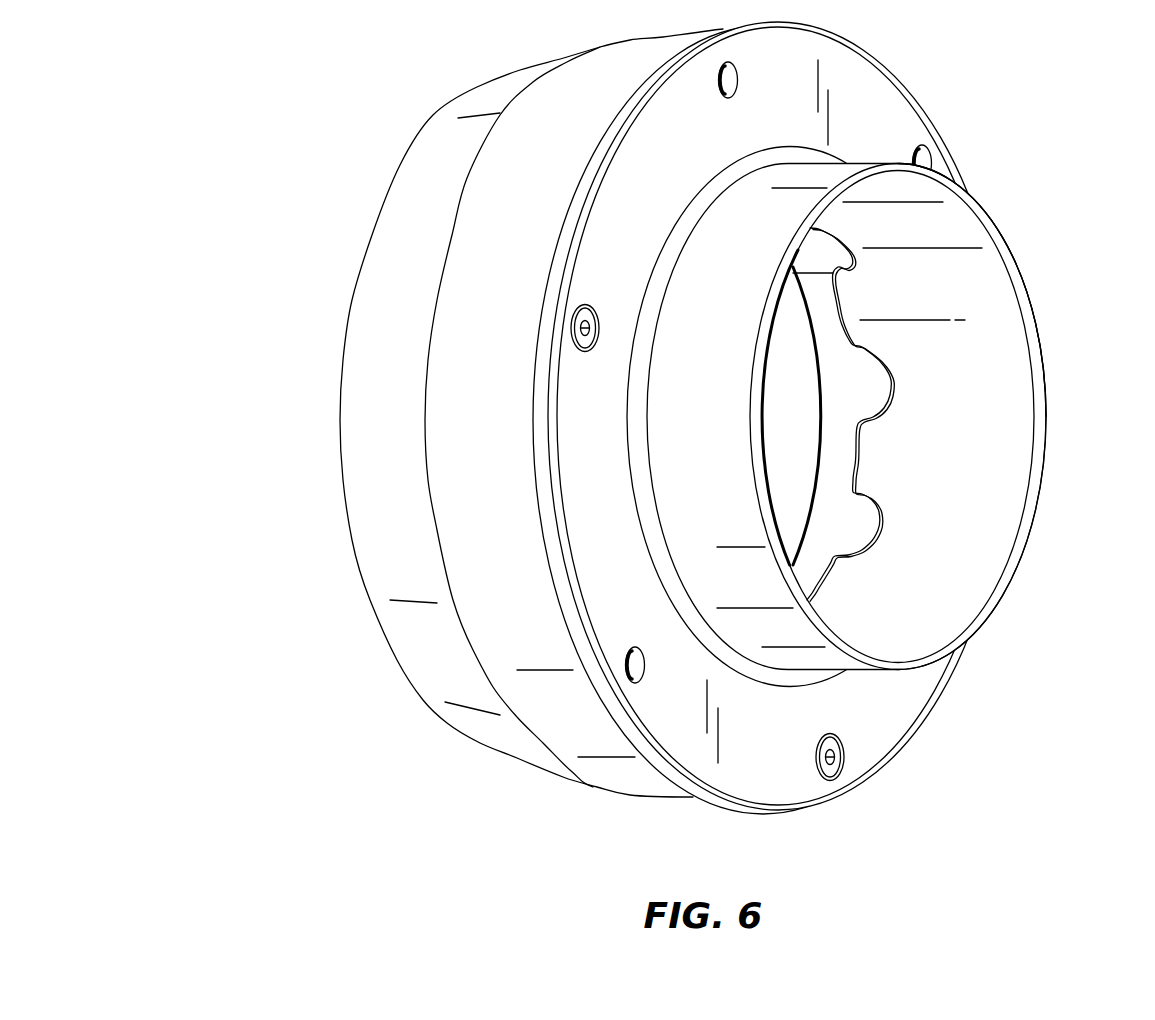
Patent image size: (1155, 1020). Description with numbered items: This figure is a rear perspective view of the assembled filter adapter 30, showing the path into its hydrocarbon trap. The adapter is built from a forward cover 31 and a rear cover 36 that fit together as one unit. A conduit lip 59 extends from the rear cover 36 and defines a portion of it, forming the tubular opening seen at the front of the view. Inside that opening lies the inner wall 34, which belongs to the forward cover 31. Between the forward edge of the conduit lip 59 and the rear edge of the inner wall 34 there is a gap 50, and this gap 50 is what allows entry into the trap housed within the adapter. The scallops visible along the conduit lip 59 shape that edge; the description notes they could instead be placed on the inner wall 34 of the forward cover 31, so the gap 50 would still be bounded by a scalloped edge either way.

The filter adapter 30 is at (1030, 72).
The forward cover 31 is at (300, 200).
The inner wall 34 is at (782, 418).
The rear cover 36 is at (976, 161).
The gap 50 is at (864, 373).
The conduit lip 59 is at (977, 463).